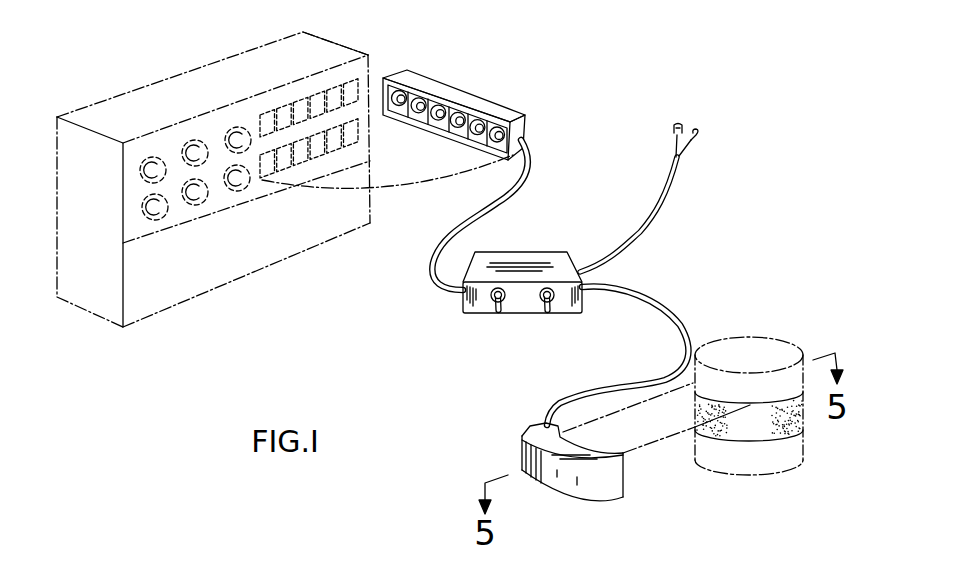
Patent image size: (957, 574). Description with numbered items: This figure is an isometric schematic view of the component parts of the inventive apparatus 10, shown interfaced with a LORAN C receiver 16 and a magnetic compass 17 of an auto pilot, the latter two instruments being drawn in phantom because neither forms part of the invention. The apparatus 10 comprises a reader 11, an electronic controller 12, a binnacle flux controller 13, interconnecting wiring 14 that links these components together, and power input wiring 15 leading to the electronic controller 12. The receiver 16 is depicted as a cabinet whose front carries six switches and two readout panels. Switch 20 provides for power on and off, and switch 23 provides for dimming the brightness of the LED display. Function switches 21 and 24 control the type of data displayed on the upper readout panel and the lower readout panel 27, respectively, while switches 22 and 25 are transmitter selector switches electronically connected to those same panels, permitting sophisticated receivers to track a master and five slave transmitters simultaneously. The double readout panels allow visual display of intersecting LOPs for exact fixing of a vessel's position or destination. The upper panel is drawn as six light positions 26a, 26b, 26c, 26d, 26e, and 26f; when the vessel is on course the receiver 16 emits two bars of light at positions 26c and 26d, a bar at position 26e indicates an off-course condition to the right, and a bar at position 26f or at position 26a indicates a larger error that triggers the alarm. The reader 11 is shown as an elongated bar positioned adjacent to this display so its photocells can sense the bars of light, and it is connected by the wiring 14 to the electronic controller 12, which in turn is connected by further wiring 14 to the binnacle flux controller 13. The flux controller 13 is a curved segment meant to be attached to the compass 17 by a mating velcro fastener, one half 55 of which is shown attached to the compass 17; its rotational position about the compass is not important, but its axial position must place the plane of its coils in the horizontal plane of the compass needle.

The inventive apparatus 10 is at (492, 362).
The reader 11 is at (478, 93).
The electronic controller 12 is at (540, 313).
The binnacle flux controller 13 is at (598, 500).
The interconnecting wiring 14 is at (487, 208).
The power input wiring 15 is at (650, 222).
The LORAN C receiver 16 is at (205, 295).
The magnetic compass 17 is at (773, 473).
The power switch 20 is at (153, 157).
The function switch 21 is at (200, 141).
The transmitter selector switch 22 is at (242, 128).
The dimming switch 23 is at (162, 218).
The function switch 24 is at (202, 202).
The transmitter selector switch 25 is at (244, 188).
The display position 26a is at (267, 113).
The display position 26b is at (285, 107).
The display position 26c is at (302, 100).
The display position 26d is at (317, 96).
The display position 26e is at (335, 90).
The display position 26f is at (357, 81).
The readout panel 27 is at (362, 138).
The velcro fastener half 55 is at (805, 418).